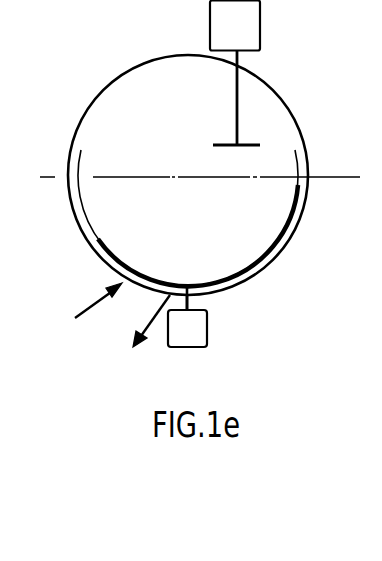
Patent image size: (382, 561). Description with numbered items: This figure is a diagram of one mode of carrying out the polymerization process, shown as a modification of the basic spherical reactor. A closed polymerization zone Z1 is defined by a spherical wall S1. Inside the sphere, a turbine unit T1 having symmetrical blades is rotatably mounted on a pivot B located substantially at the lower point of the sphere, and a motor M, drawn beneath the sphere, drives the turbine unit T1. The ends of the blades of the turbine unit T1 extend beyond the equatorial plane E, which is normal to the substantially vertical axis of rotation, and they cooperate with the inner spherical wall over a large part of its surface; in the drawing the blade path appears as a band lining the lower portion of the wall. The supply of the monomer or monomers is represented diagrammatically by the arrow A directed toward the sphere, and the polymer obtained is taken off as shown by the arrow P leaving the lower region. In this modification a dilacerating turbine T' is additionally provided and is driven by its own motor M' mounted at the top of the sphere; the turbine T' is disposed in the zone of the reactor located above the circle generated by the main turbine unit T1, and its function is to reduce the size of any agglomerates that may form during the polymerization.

The spherical wall S1 is at (278, 93).
The turbine unit T1 is at (277, 253).
The dilacerating turbine T' is at (275, 132).
The polymerization zone Z1 is at (145, 217).
The equatorial plane E is at (200, 165).
The motor M is at (187, 316).
The motor M' is at (235, 73).
The pivot B is at (190, 304).
The arrow for monomer supply A is at (96, 304).
The polymer take-off P is at (162, 312).